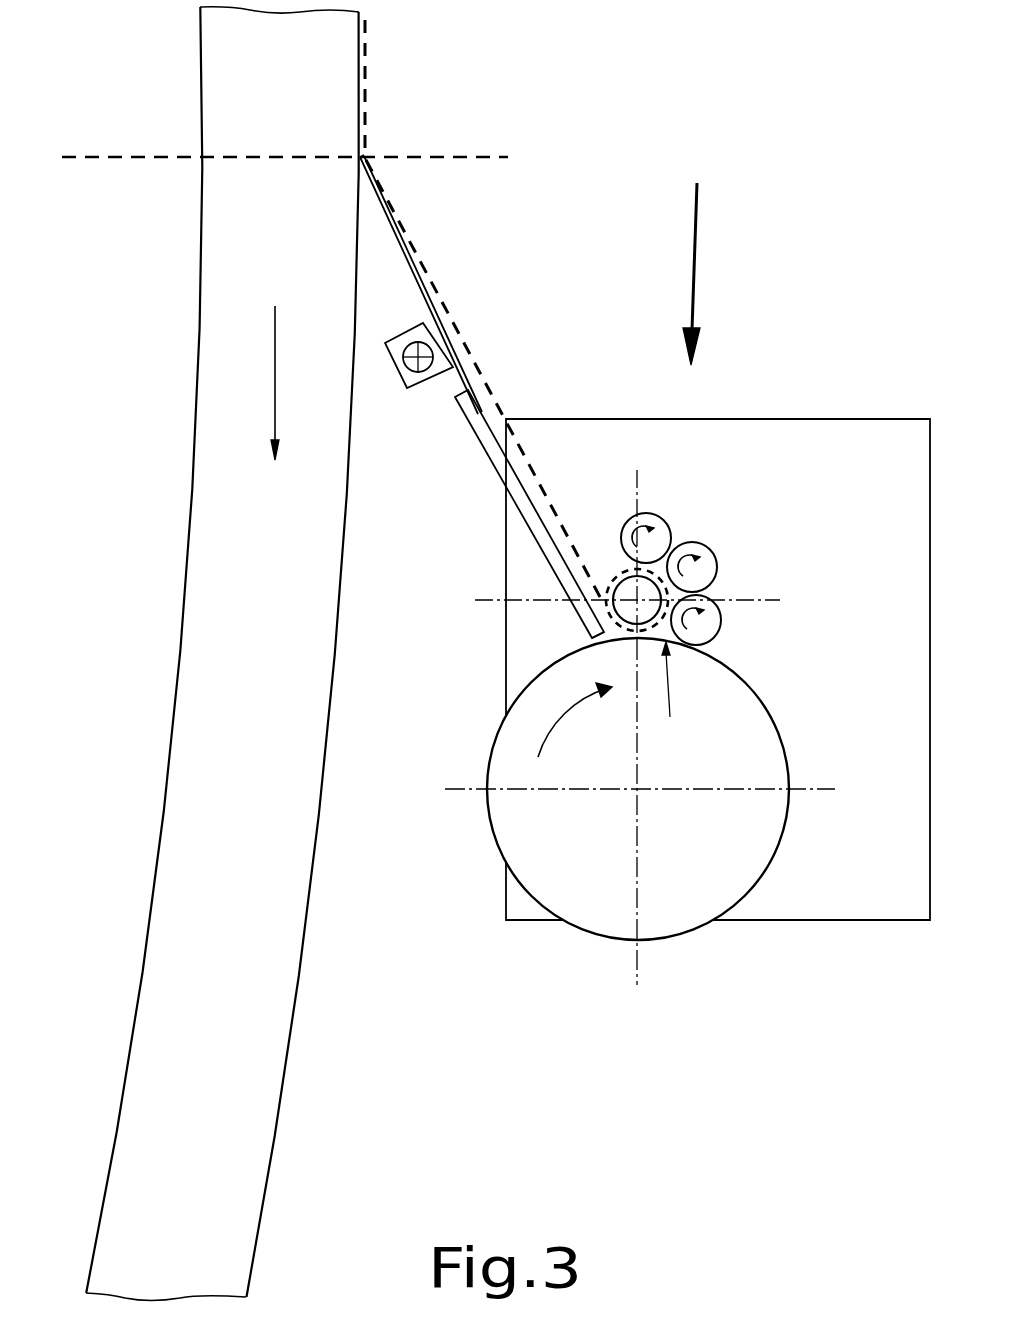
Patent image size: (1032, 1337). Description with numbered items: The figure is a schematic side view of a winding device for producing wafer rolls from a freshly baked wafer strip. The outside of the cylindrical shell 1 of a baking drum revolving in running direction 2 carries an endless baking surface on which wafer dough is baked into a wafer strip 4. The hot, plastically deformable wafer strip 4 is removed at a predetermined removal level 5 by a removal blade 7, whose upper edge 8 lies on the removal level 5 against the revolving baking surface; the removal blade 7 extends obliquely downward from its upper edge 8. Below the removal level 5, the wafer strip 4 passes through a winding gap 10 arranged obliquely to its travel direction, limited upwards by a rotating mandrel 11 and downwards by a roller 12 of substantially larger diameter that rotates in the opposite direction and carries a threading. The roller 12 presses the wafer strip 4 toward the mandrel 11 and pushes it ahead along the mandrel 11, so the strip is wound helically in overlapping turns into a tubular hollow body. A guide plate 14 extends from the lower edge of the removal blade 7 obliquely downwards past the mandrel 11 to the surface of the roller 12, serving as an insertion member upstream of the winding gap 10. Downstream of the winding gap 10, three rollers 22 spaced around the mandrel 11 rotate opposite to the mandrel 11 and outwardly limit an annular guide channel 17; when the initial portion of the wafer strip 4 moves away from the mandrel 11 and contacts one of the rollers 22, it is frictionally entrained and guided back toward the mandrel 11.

The cylindrical shell 1 is at (213, 49).
The running direction 2 is at (275, 371).
The wafer strip 4 is at (366, 72).
The removal level 5 is at (88, 153).
The removal blade 7 is at (400, 257).
The upper edge 8 is at (362, 153).
The winding gap 10 is at (593, 635).
The mandrel 11 is at (627, 588).
The roller 12 is at (502, 748).
The guide plate 14 is at (477, 442).
The annular guide channel 17 is at (674, 700).
The rollers 22 is at (658, 528).